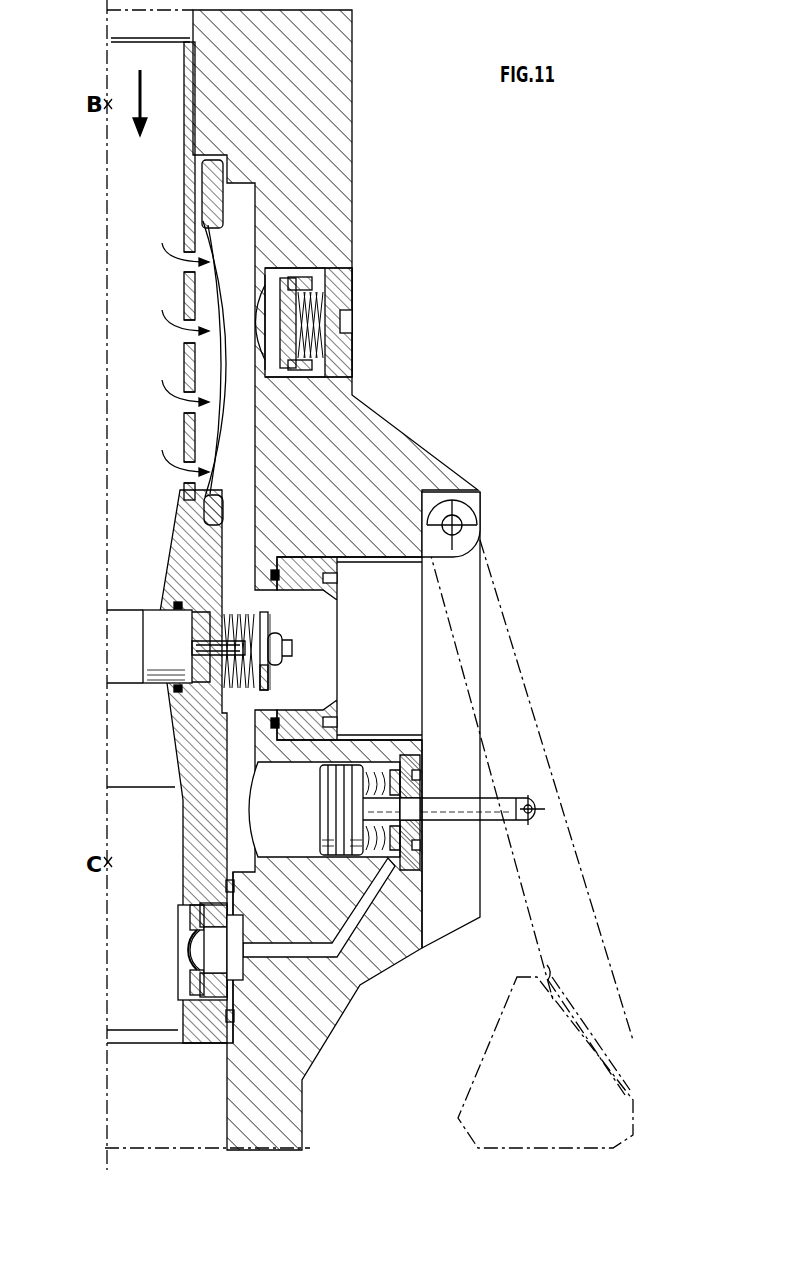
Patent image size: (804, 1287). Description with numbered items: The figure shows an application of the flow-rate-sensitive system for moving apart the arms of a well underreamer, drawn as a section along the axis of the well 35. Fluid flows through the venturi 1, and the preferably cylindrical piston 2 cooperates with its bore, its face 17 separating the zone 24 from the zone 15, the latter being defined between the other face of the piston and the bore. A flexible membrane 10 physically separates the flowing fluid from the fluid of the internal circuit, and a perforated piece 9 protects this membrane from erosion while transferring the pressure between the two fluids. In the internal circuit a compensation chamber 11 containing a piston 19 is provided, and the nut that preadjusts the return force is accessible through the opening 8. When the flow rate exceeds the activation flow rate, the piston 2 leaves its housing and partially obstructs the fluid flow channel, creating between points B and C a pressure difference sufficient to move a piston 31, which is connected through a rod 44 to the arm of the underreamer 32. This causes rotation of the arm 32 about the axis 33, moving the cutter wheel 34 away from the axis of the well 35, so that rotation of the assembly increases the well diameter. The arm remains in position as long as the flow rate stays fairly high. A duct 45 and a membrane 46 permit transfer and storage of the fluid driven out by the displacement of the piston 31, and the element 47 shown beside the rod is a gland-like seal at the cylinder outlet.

The venturi 1 is at (196, 758).
The piston 2 is at (155, 640).
The opening 8 is at (337, 610).
The perforated piece 9 is at (185, 283).
The flexible membrane 10 is at (220, 376).
The compensation chamber 11 is at (320, 288).
The zone 15 is at (203, 678).
The face of the piston 17 is at (143, 625).
The piston of the compensation chamber 19 is at (327, 377).
The zone 24 is at (122, 662).
The piston 31 is at (330, 810).
The arm of the underreamer 32 is at (538, 757).
The axis 33 is at (455, 525).
The cutter wheel 34 is at (615, 1120).
The axis of the well 35 is at (105, 1100).
The rod 44 is at (447, 806).
The duct 45 is at (305, 950).
The membrane 46 is at (188, 950).
The gland 47 is at (388, 848).